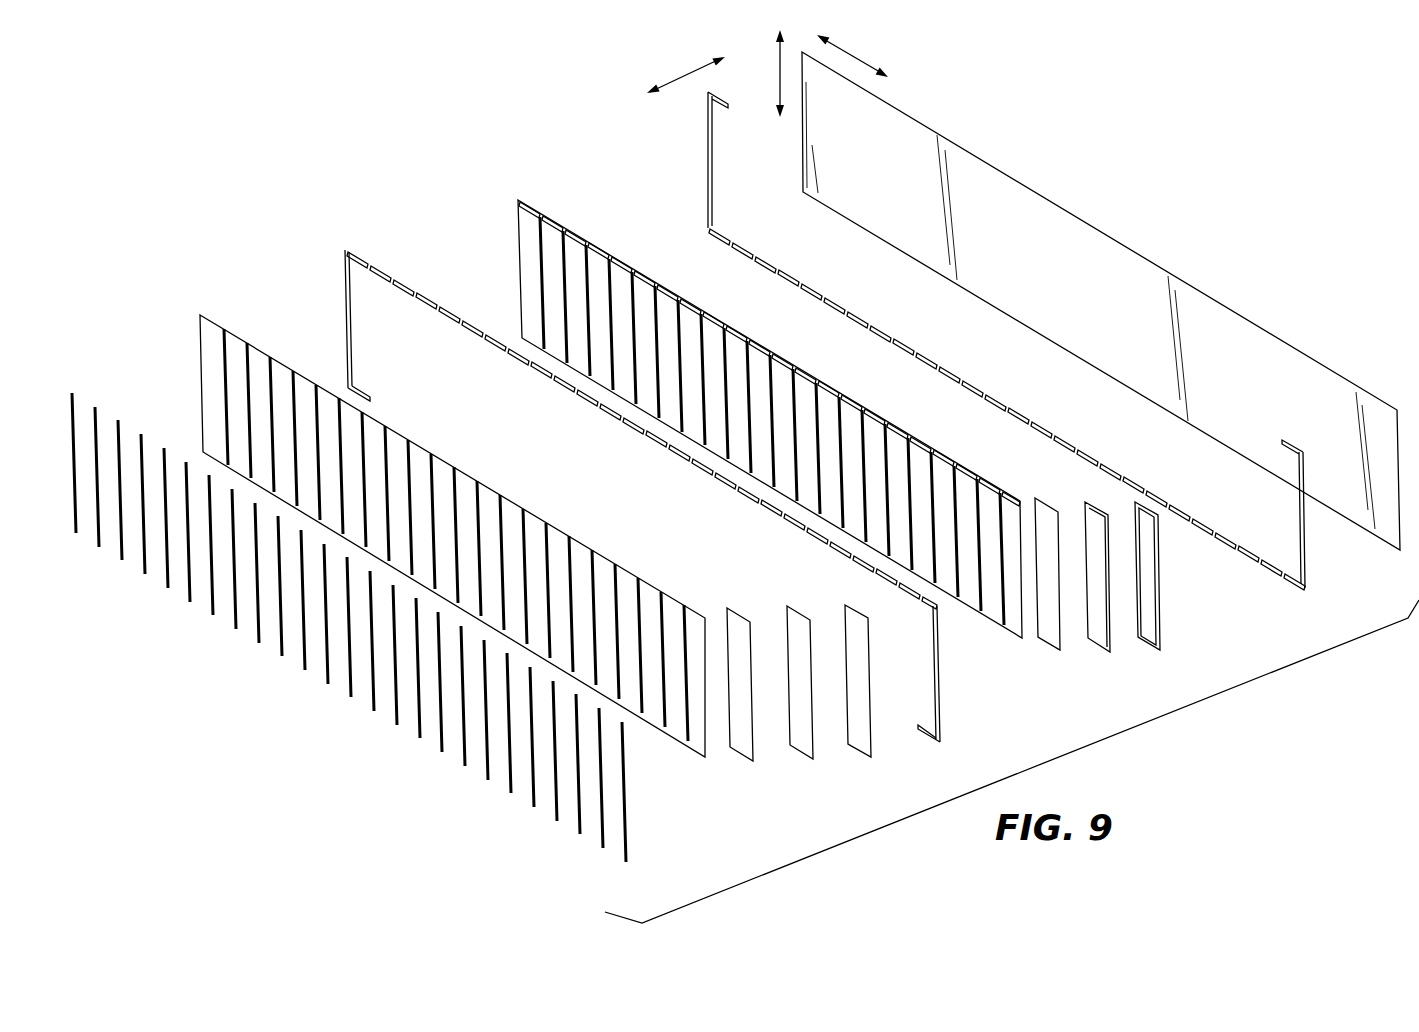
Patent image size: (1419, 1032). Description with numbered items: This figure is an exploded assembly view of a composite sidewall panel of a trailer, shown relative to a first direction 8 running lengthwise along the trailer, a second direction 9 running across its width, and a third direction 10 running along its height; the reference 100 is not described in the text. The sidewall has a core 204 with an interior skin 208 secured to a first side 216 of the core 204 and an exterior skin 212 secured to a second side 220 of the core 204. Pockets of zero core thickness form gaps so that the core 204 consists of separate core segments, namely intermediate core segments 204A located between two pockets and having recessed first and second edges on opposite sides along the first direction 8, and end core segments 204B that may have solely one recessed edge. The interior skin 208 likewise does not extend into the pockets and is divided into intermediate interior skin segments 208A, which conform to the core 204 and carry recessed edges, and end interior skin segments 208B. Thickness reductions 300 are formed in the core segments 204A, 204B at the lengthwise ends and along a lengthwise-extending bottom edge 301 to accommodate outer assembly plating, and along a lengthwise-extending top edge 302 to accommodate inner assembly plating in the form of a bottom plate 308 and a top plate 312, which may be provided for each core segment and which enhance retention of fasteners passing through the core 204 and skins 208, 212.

The first direction 8 is at (850, 52).
The second direction 9 is at (685, 73).
The third direction 10 is at (777, 70).
The thermal management assembly 100 is at (406, 116).
The core 204 is at (508, 226).
The intermediate core segment 204A is at (1148, 580).
The end core segment 204B is at (1097, 529).
The interior skin 208 is at (238, 318).
The intermediate interior skin segment 208A is at (860, 742).
The end interior skin segment 208B is at (790, 633).
The exterior skin 212 is at (1114, 272).
The first side 216 is at (528, 288).
The second side 220 is at (623, 260).
The thickness reduction 300 is at (853, 395).
The bottom edge 301 is at (1013, 625).
The top edge 302 is at (893, 425).
The bottom plate 308 is at (863, 318).
The top plate 312 is at (650, 447).